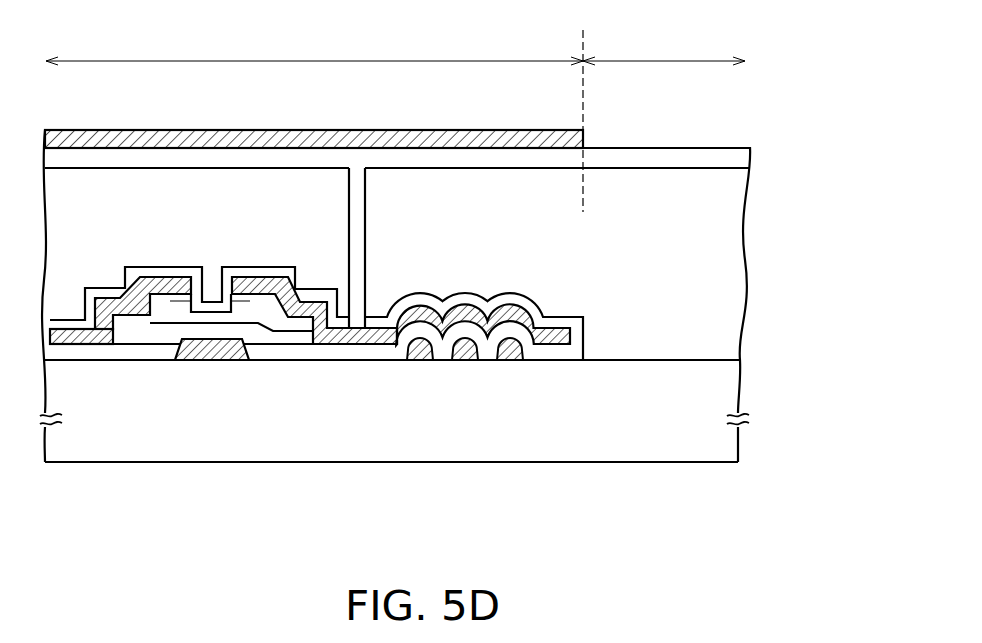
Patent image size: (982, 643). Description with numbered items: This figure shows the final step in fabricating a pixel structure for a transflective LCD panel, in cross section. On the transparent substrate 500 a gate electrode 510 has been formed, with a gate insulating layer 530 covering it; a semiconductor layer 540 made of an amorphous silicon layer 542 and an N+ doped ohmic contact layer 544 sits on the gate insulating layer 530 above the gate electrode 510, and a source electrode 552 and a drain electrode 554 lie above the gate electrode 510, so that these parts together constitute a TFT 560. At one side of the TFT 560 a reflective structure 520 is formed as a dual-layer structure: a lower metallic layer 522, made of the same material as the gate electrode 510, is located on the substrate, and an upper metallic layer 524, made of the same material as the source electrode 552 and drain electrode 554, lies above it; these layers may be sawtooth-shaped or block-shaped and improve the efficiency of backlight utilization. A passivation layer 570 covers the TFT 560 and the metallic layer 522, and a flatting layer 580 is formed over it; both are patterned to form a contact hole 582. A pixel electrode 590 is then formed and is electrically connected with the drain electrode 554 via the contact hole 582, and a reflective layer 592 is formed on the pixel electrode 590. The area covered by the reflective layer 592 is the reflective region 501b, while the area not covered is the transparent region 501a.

The transparent substrate 500 is at (737, 380).
The transparent region 501a is at (664, 120).
The reflective region 501b is at (314, 46).
The gate electrode 510 is at (193, 354).
The reflective structure 520 is at (483, 382).
The metallic layer 522 is at (418, 366).
The metallic layer 524 is at (481, 336).
The gate insulating layer 530 is at (78, 354).
The semiconductor layer 540 is at (275, 424).
The amorphous silicon layer 542 is at (280, 340).
The ohmic contact layer 544 is at (298, 323).
The source electrode 552 is at (169, 300).
The drain electrode 554 is at (243, 288).
The TFT 560 is at (223, 436).
The passivation layer 570 is at (172, 280).
The flatting layer 580 is at (733, 222).
The contact hole 582 is at (360, 294).
The pixel electrode 590 is at (747, 156).
The reflective layer 592 is at (550, 130).